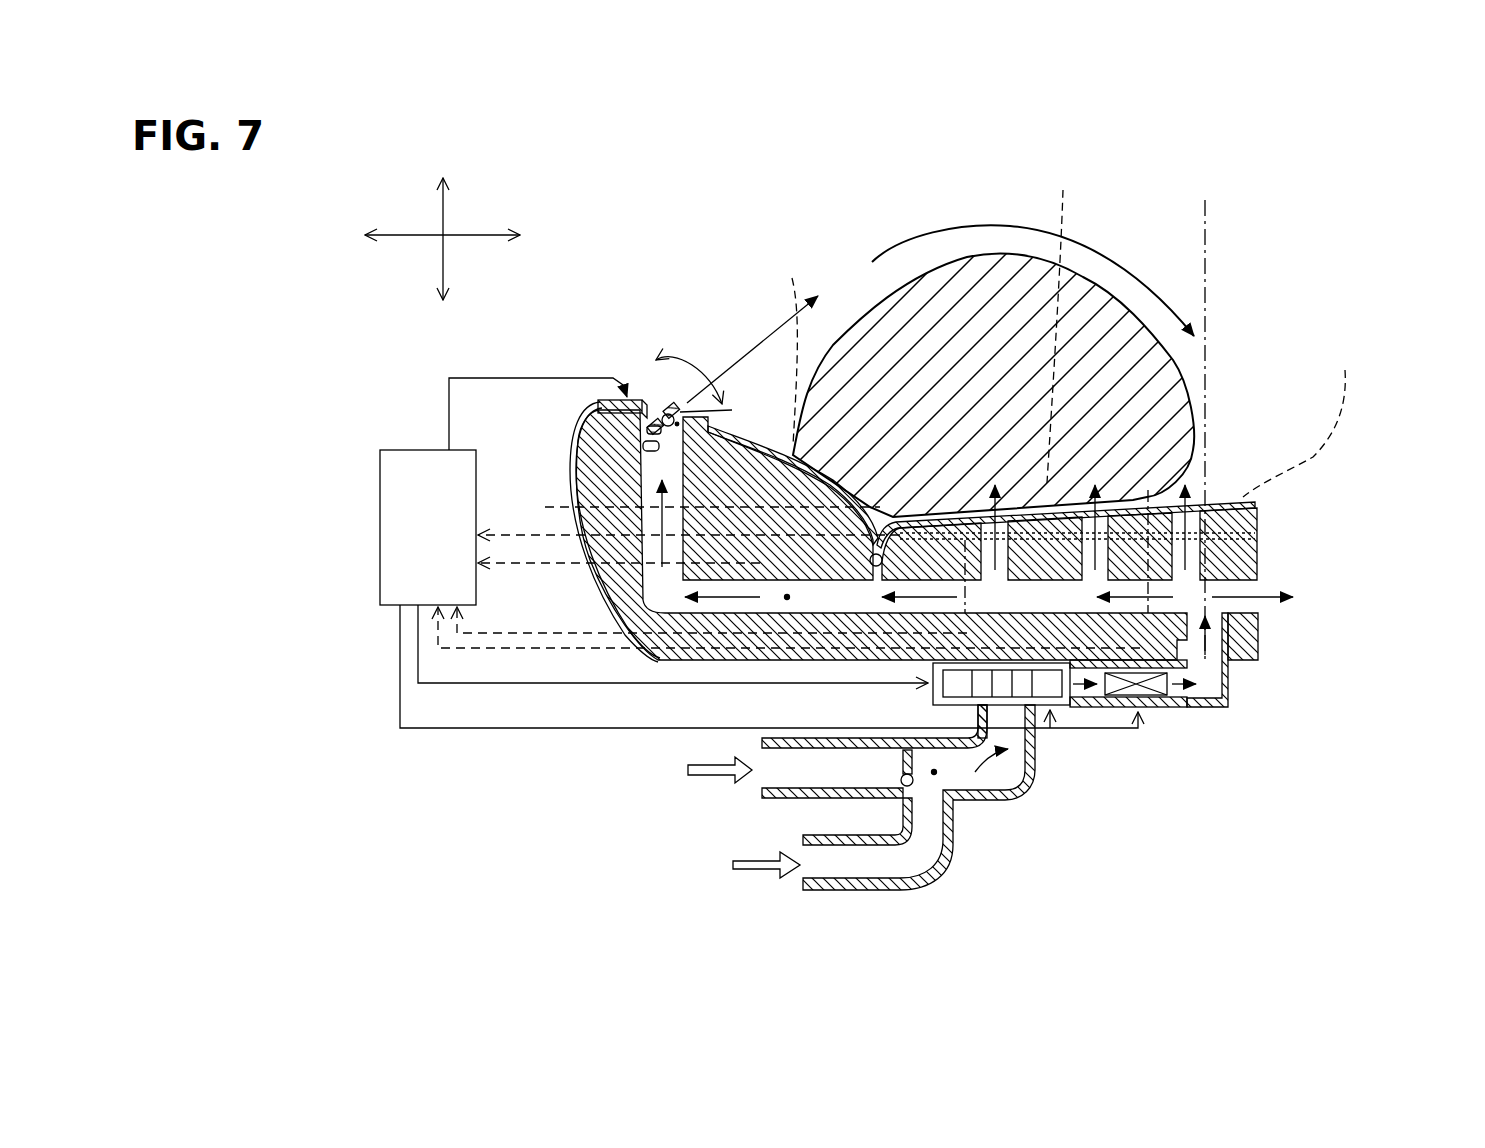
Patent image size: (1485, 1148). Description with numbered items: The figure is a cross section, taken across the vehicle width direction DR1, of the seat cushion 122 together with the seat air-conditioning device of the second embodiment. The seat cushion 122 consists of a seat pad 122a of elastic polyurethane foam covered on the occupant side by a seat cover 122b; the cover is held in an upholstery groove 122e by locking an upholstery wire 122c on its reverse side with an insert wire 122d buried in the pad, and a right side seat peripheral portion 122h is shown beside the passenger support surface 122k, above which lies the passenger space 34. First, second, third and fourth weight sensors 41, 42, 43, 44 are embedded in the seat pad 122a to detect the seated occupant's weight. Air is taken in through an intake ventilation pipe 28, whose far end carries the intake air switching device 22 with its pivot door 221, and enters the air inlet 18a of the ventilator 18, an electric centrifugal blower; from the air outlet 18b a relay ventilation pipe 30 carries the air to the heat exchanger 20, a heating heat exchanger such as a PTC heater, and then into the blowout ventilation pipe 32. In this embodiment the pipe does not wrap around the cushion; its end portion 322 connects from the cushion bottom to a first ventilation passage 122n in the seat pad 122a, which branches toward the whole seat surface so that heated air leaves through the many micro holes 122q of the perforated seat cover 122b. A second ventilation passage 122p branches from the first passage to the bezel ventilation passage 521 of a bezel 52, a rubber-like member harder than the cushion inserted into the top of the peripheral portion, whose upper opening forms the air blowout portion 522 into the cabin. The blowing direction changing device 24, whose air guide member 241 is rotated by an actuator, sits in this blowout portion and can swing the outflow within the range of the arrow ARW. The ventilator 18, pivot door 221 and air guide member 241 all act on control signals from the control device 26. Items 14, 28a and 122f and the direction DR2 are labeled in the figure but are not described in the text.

The seat cushion 14 is at (1110, 300).
The ventilator 18 is at (1052, 697).
The air inlet 18a is at (1007, 703).
The air outlet 18b is at (1105, 692).
The heat exchanger 20 is at (1165, 688).
The intake air switching device 22 is at (895, 776).
The pivot door 221 is at (903, 760).
The blowing direction changing device 24 is at (623, 396).
The air guide member 241 is at (657, 405).
The control device 26 is at (398, 462).
The intake ventilation pipe 28 is at (1003, 793).
The duct inlet passage 28a is at (937, 773).
The relay ventilation pipe 30 is at (1083, 703).
The blowout ventilation pipe 32 is at (1222, 708).
The end portion 322 is at (1250, 655).
The passenger space 34 is at (1158, 206).
The first weight sensor 41 is at (1301, 418).
The second weight sensor 42 is at (1063, 322).
The third weight sensor 43 is at (792, 347).
The fourth weight sensor 44 is at (688, 511).
The bezel 52 is at (613, 402).
The bezel ventilation passage 521 is at (664, 447).
The air blowout portion 522 is at (655, 448).
The seat cushion 122 is at (1145, 490).
The seat pad 122a is at (1255, 545).
The seat cover 122b is at (1243, 503).
The upholstery wire 122c is at (930, 510).
The insert wire 122d is at (960, 500).
The upholstery groove 122e is at (872, 520).
The cushion cover 122f is at (1023, 160).
The right side seat peripheral portion 122h is at (764, 442).
The passenger support surface 122k is at (1220, 503).
The first ventilation passage 122n is at (1138, 700).
The second ventilation passage 122p is at (787, 597).
The micro holes 122q is at (780, 430).
The vehicle width direction DR1 is at (477, 237).
The up-down direction DR2 is at (443, 205).
The arrow ARw ARW is at (665, 350).